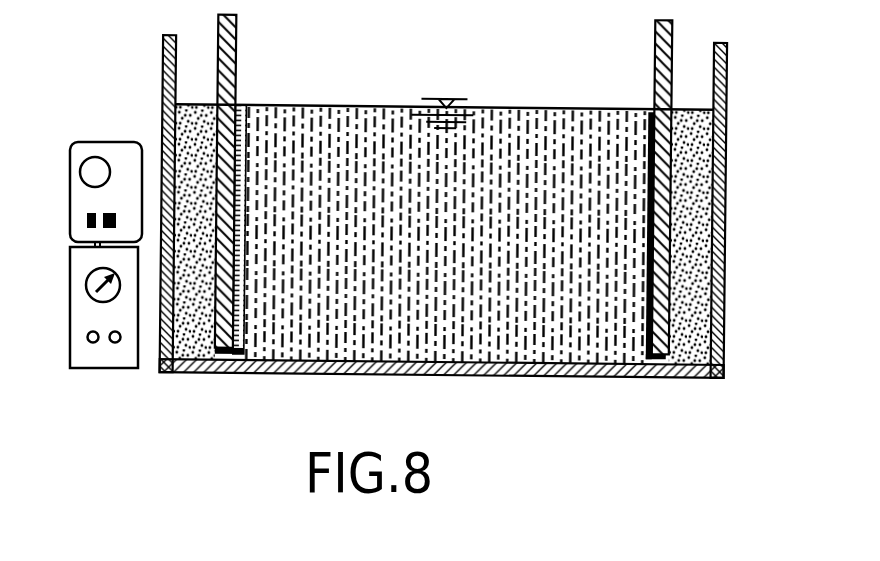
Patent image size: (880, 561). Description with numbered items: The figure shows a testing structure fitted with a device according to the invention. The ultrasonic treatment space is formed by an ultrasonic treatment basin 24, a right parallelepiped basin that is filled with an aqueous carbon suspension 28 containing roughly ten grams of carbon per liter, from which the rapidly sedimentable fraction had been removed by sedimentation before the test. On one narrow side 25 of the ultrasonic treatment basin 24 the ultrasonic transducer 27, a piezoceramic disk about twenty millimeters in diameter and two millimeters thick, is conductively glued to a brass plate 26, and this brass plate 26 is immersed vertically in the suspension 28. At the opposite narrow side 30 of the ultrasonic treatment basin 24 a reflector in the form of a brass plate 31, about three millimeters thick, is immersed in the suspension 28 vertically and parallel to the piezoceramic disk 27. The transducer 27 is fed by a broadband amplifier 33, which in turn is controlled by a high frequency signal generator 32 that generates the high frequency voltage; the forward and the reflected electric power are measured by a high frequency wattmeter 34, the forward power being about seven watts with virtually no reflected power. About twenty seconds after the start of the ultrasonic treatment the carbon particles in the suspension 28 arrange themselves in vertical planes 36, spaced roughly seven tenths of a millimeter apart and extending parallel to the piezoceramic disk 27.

The ultrasonic treatment basin 24 is at (424, 376).
The narrow side 25 is at (162, 63).
The brass plate 26 is at (228, 35).
The ultrasonic transducer 27 is at (252, 110).
The aqueous carbon suspension 28 is at (690, 188).
The opposite narrow side 30 is at (727, 50).
The brass plate reflector 31 is at (659, 57).
The high frequency signal generator 32 is at (83, 299).
The broadband amplifier 33 is at (85, 216).
The high frequency wattmeter 34 is at (95, 172).
The vertical planes 36 is at (602, 118).